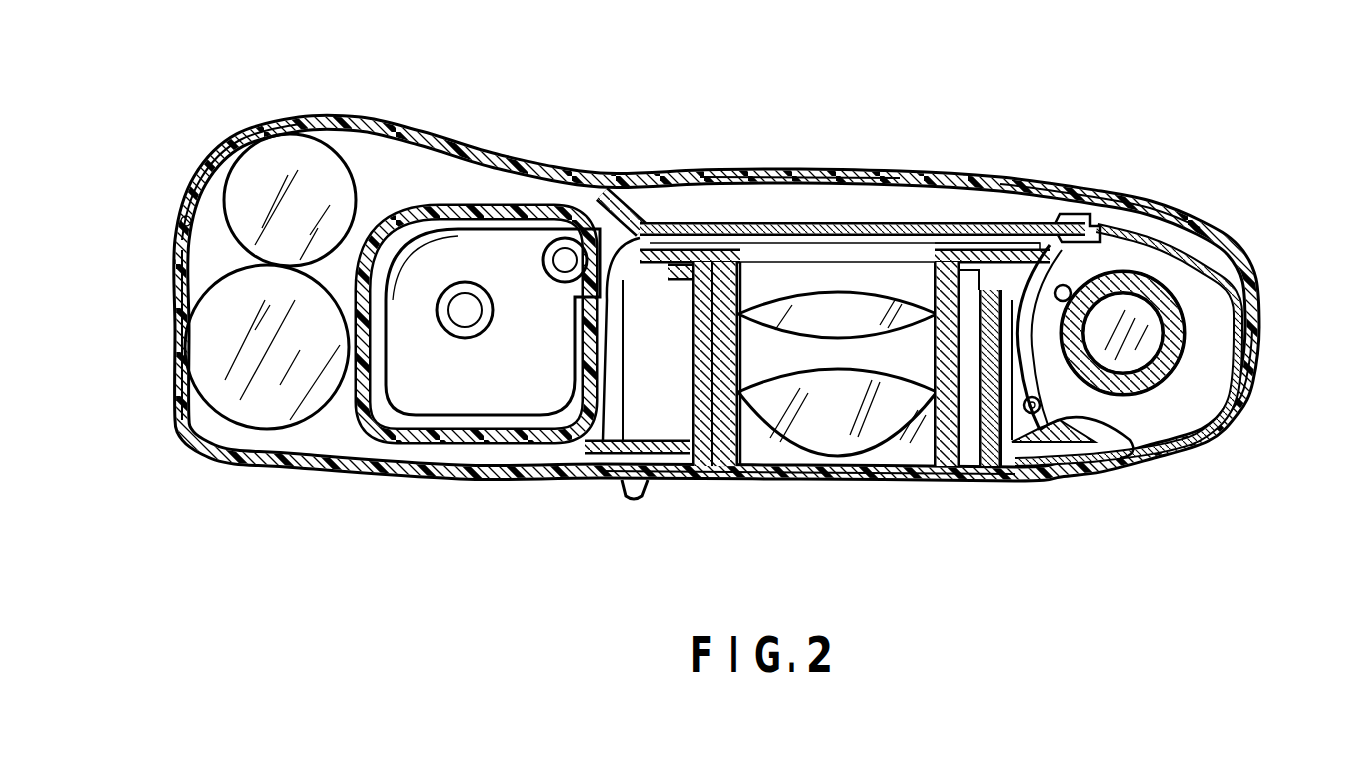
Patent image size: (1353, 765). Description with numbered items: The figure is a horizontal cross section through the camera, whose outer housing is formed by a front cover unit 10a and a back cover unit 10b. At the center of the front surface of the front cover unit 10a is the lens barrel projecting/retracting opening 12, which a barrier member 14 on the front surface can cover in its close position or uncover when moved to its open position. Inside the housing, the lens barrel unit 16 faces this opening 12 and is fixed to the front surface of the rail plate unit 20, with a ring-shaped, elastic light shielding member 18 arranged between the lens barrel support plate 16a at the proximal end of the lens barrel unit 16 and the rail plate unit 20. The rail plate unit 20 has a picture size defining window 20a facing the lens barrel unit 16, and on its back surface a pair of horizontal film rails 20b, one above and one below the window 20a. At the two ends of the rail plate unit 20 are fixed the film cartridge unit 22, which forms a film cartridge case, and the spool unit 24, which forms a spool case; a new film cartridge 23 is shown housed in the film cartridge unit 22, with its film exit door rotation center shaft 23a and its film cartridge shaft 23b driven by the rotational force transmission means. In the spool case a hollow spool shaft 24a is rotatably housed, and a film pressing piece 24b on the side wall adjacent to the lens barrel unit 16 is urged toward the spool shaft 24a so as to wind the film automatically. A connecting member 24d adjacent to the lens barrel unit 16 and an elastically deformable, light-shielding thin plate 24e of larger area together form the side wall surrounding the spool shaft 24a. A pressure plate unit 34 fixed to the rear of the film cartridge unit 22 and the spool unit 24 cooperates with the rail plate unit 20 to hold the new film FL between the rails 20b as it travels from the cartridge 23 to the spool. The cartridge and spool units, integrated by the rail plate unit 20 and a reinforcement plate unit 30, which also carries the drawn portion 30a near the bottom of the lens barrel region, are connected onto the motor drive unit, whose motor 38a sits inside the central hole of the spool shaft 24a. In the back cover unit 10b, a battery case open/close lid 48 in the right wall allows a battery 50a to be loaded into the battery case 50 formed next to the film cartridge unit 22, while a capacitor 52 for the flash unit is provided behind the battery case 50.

The front cover unit 10a is at (1252, 398).
The back cover unit 10b is at (1202, 212).
The lens barrel projecting/retracting opening 12 is at (740, 460).
The barrier member 14 is at (830, 468).
The lens barrel unit 16 is at (690, 353).
The lens barrel support plate 16a is at (670, 280).
The ring-shaped light shielding member 18 is at (740, 262).
The rail plate unit 20 is at (695, 224).
The picture size defining window 20a is at (913, 245).
The film rails 20b is at (998, 240).
The film cartridge unit 22 is at (417, 203).
The new film cartridge 23 is at (515, 245).
The rotation center shaft of film exit open/close door 23a is at (560, 280).
The film cartridge shaft 23b is at (460, 336).
The spool unit 24 is at (1067, 257).
The spool shaft 24a is at (1187, 326).
The film pressing piece 24b is at (1042, 428).
The connecting member 24d is at (938, 466).
The elastically deformable thin plate 24e is at (1218, 290).
The reinforcement plate unit 30 is at (672, 458).
The bottom projection 30a is at (645, 437).
The pressure plate unit 34 is at (797, 215).
The motor 38a is at (1165, 380).
The battery case open/close lid 48 is at (178, 283).
The battery case 50 is at (205, 245).
The battery 50a is at (205, 350).
The capacitor 52 is at (290, 137).
The new film FL is at (621, 235).